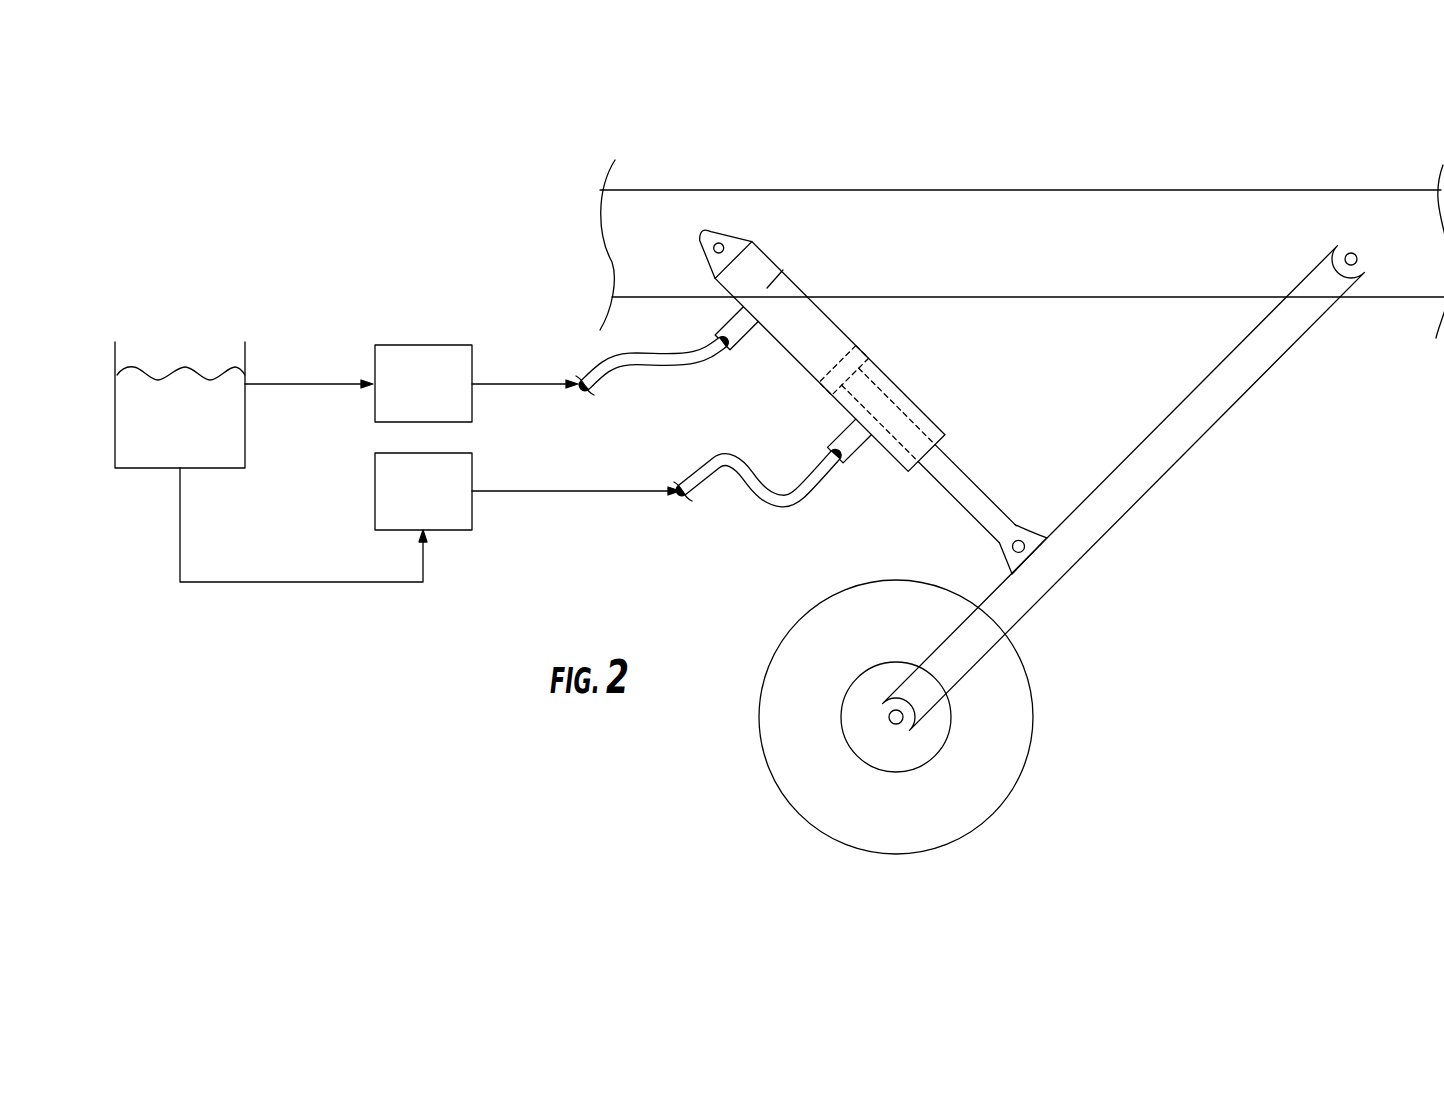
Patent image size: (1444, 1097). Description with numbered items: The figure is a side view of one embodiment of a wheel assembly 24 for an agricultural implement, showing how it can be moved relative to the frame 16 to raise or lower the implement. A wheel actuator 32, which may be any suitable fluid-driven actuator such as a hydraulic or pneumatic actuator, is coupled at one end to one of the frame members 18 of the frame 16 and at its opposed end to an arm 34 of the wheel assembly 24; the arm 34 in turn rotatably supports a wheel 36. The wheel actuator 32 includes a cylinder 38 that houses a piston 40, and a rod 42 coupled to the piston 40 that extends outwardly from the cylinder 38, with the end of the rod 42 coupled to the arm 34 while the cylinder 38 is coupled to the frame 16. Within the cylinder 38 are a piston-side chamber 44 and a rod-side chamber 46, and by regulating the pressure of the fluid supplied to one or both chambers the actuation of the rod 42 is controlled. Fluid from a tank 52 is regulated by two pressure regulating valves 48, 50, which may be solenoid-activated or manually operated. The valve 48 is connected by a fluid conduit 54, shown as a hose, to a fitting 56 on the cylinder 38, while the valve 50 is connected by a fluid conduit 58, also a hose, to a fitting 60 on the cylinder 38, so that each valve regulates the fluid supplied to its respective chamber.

The frame 16 is at (1032, 459).
The frame member 18 is at (1128, 213).
The wheel assembly 24 is at (475, 339).
The wheel actuator 32 is at (873, 340).
The arm 34 is at (1205, 435).
The wheel 36 is at (1032, 722).
The cylinder 38 is at (840, 324).
The piston 40 is at (819, 382).
The rod 42 is at (975, 485).
The piston-side chamber 44 is at (767, 288).
The rod-side chamber 46 is at (918, 407).
The pressure regulating valve 48 is at (375, 502).
The pressure regulating valve 50 is at (432, 345).
The tank 52 is at (213, 468).
The fluid conduit 54 is at (765, 503).
The fitting 56 is at (845, 462).
The fluid conduit 58 is at (643, 363).
The fitting 60 is at (742, 337).